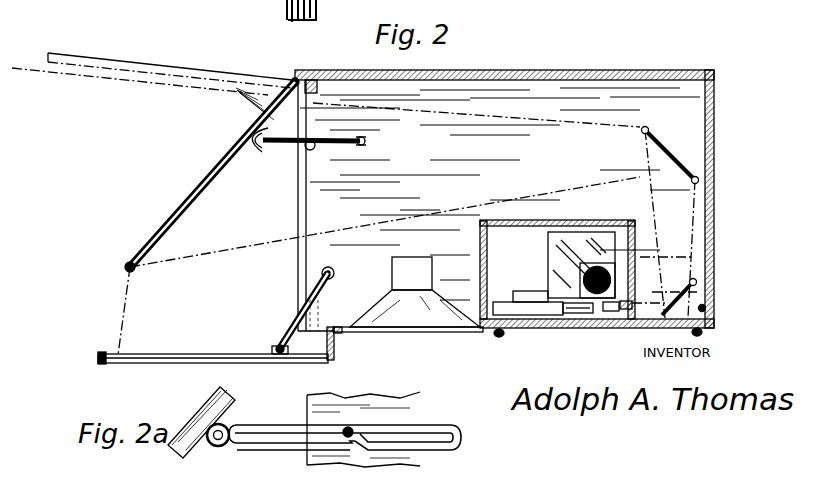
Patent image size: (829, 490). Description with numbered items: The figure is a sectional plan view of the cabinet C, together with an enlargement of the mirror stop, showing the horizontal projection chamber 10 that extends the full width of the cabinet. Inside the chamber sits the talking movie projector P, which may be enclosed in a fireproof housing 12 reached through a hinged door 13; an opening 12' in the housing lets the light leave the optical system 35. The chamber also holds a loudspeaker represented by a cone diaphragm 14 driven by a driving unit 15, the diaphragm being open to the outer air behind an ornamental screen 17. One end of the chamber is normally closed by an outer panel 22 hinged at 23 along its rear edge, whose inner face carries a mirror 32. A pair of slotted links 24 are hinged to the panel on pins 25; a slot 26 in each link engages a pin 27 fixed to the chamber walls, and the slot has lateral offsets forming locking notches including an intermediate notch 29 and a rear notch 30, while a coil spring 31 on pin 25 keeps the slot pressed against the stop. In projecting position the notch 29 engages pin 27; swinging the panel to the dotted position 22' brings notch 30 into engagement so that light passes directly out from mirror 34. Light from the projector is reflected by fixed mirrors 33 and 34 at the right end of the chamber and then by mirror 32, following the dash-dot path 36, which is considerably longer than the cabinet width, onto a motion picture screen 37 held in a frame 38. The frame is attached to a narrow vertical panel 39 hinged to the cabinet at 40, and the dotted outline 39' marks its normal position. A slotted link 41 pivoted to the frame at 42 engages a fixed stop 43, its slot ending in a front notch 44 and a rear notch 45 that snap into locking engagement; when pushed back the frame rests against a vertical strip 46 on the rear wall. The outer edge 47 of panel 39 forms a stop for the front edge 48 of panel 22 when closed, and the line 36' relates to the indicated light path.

In FIG. 2, the projection chamber 10 is at (518, 72).
In FIG. 2, the cabinet C is at (714, 95).
In FIG. 2, the vertical strip 46 is at (313, 80).
In FIG. 2, the fixed stop 43 is at (320, 268).
In FIG. 2, the hinge 23 is at (293, 80).
In FIG. 2A, the hinge 23 is at (240, 430).
In FIG. 2, the outer panel 22 is at (212, 174).
In FIG. 2A, the outer panel 22 is at (199, 422).
In FIG. 2, the mirror 32 is at (228, 164).
In FIG. 2, the extreme rear position of panel 22' is at (170, 61).
In FIG. 2, the dash-dot lines 36 is at (377, 211).
In FIG. 2, the light rays 36' is at (345, 209).
In FIG. 2, the front edge of panel 48 is at (136, 267).
In FIG. 2, the slotted bar or link 24 is at (272, 144).
In FIG. 2A, the slotted bar or link 24 is at (290, 424).
In FIG. 2, the pin 25 is at (258, 140).
In FIG. 2A, the pin 25 is at (218, 444).
In FIG. 2, the pin 27 is at (322, 147).
In FIG. 2A, the pin 27 is at (348, 426).
In FIG. 2, the slot 26 is at (365, 146).
In FIG. 2A, the slot 26 is at (392, 440).
In FIG. 2, the fixed mirror 34 is at (672, 160).
In FIG. 2, the talking movie projector P is at (596, 233).
In FIG. 2, the fireproof case or housing 12 is at (557, 269).
In FIG. 2, the hinged door 13 is at (550, 328).
In FIG. 2, the optical system 35 is at (604, 315).
In FIG. 2, the opening 12' is at (642, 288).
In FIG. 2, the fixed mirror 33 is at (698, 288).
In FIG. 2, the driving unit 15 is at (432, 273).
In FIG. 2, the cone diaphragm 14 is at (385, 308).
In FIG. 2, the ornamental screen 17 is at (456, 333).
In FIG. 2, the rear notch 45 is at (334, 273).
In FIG. 2, the slotted link 41 is at (295, 318).
In FIG. 2, the front notch 44 is at (280, 344).
In FIG. 2, the pivot pin 42 is at (270, 349).
In FIG. 2, the dotted outline of supporting panel 39' is at (327, 310).
In FIG. 2, the narrow vertical panel 39 is at (353, 348).
In FIG. 2, the hinge 40 is at (340, 334).
In FIG. 2, the motion picture screen 37 is at (150, 354).
In FIG. 2, the frame 38 is at (100, 353).
In FIG. 2, the outer edge of panel 47 is at (322, 360).
In FIG. 2A, the coil spring 31 is at (232, 428).
In FIG. 2A, the intermediate notch 29 is at (362, 442).
In FIG. 2A, the notch 30 is at (452, 424).